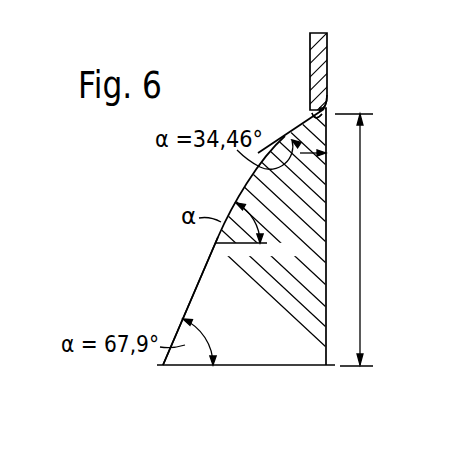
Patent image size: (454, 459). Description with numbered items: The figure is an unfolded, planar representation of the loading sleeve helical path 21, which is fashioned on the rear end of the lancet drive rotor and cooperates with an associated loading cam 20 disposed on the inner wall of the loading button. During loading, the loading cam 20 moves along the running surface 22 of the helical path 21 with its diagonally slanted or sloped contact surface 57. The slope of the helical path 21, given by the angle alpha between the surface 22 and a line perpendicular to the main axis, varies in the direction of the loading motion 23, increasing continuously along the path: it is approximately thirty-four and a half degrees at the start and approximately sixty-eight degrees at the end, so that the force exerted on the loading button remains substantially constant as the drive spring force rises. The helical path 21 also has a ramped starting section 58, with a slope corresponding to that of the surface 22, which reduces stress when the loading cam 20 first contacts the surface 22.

The loading cam 20 is at (323, 62).
The helical path 21 is at (205, 265).
The running surface 22 is at (247, 181).
The loading motion 23 is at (362, 238).
The contact surface 57 is at (326, 100).
The ramped starting section 58 is at (310, 114).